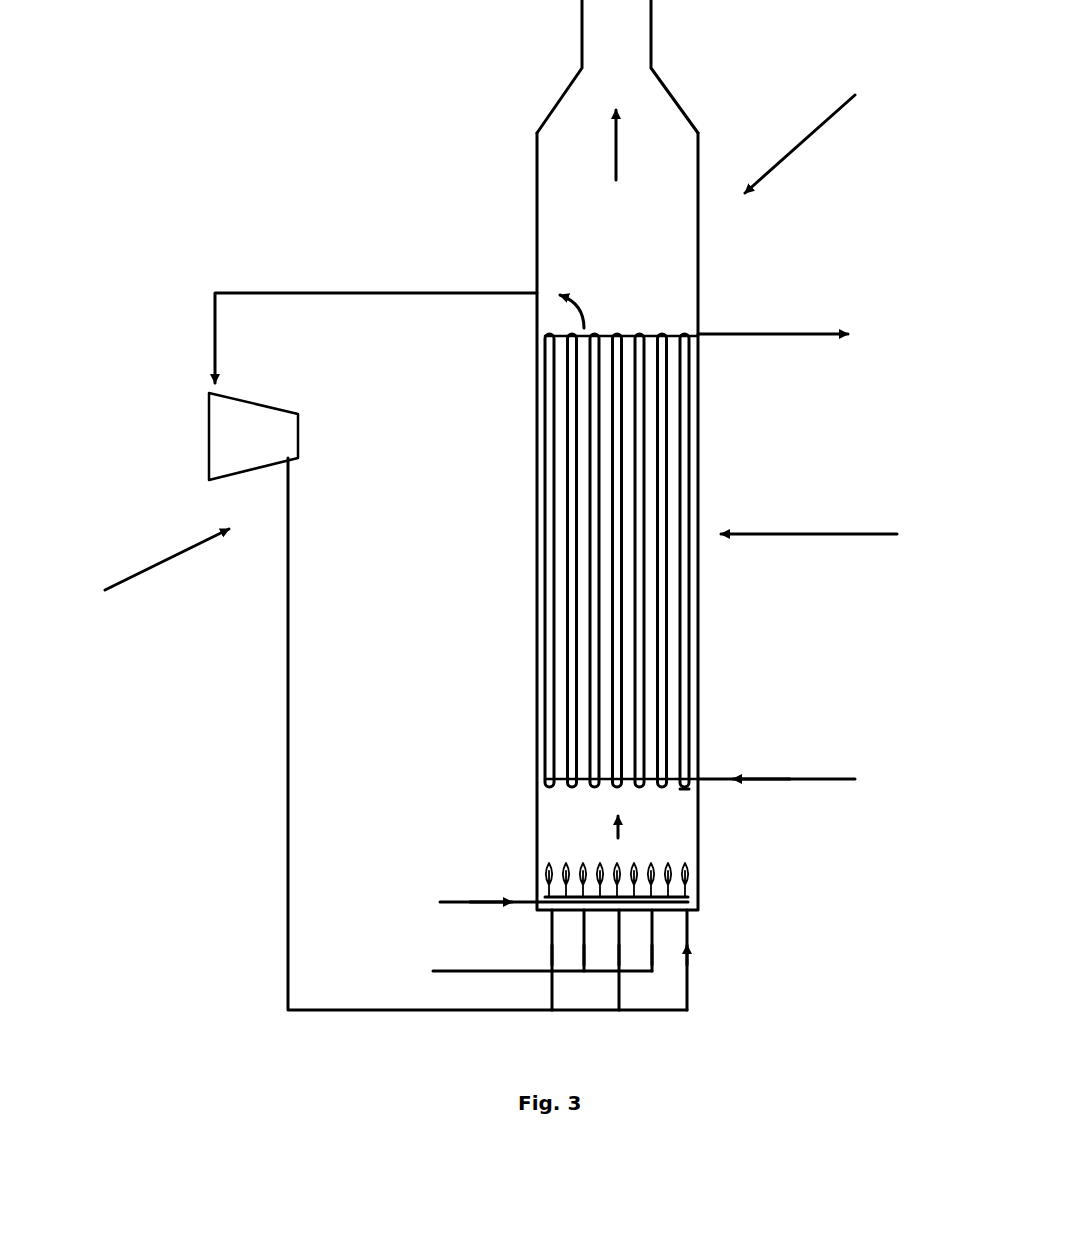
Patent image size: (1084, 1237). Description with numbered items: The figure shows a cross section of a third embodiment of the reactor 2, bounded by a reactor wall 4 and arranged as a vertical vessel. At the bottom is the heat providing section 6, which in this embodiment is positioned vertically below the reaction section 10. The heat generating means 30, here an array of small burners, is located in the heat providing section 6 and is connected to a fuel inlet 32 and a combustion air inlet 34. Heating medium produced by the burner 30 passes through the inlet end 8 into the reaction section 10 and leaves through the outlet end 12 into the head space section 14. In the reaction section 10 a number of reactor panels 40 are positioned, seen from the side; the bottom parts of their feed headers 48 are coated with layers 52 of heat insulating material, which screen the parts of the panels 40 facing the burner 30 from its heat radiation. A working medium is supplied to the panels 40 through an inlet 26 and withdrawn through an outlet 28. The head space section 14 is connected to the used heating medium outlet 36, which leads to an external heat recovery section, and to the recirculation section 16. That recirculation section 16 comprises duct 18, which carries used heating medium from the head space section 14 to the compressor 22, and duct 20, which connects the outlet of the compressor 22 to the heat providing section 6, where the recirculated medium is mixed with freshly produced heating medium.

The power generation system 2 is at (812, 132).
The reactor wall 4 is at (698, 252).
The heat providing section 6 is at (601, 854).
The inlet end 8 is at (639, 809).
The reaction section 10 is at (824, 534).
The outlet end 12 is at (634, 306).
The head space section 14 is at (634, 217).
The recirculation section 16 is at (152, 567).
The duct 18 is at (416, 293).
The duct 20 is at (288, 596).
The compressor 22 is at (260, 444).
The working fluid inlet 26 is at (830, 779).
The working fluid outlet 28 is at (800, 337).
The heat generating means 30 is at (686, 885).
The fuel inlet 32 is at (440, 902).
The combustion air inlet 34 is at (433, 971).
The used heating medium outlet 36 is at (628, 44).
The reactor panels 40 is at (548, 467).
The feed headers 48 is at (548, 786).
The layers of heat insulating material 52 is at (686, 790).